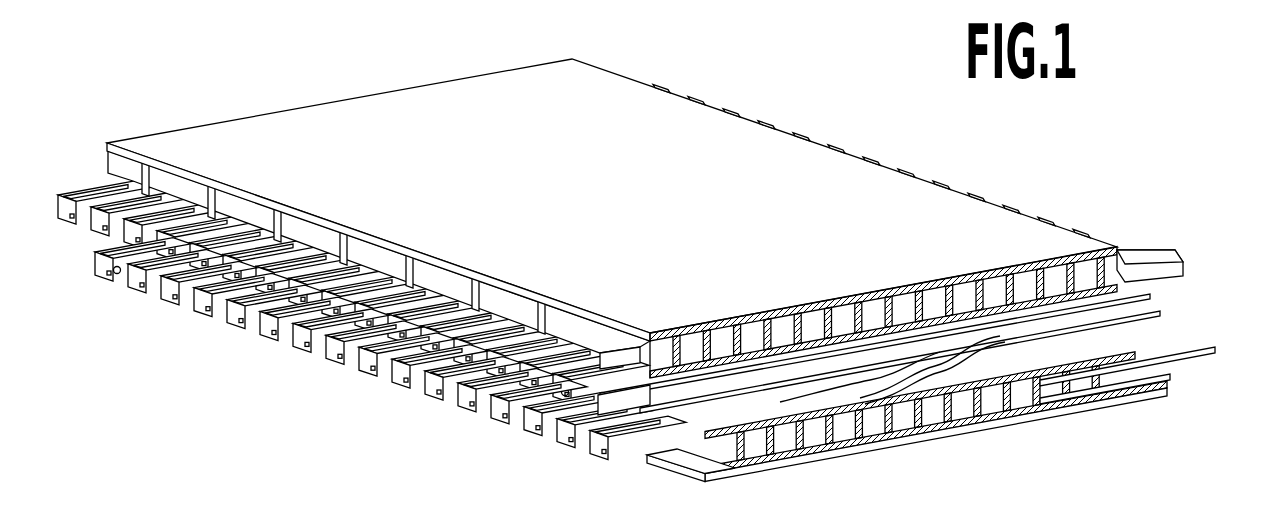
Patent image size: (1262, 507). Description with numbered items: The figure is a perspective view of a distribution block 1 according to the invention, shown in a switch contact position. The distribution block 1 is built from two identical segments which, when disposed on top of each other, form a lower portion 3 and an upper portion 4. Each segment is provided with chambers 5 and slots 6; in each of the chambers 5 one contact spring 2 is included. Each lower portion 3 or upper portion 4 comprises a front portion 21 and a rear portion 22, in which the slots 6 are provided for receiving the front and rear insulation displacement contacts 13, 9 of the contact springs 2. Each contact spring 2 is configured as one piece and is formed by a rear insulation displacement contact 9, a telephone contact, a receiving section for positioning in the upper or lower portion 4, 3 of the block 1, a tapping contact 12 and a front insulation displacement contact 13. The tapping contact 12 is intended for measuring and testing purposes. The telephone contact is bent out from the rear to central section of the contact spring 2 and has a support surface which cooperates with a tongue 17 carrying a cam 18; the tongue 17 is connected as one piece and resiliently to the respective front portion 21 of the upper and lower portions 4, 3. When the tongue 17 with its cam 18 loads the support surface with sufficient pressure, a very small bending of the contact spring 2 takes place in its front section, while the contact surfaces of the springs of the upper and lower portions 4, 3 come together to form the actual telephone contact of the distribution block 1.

The distribution block 1 is at (612, 179).
The contact spring 2 is at (930, 300).
The lower portion 3 is at (1030, 428).
The upper portion 4 is at (1032, 238).
The chambers 5 is at (1110, 396).
The slots 6 is at (622, 457).
The rear insulation displacement contact 9 is at (1185, 354).
The tapping contact 12 is at (770, 432).
The front insulation displacement contact 13 is at (622, 384).
The tongue 17 is at (835, 400).
The cam 18 is at (882, 376).
The front portion 21 is at (372, 339).
The rear portion 22 is at (1192, 260).